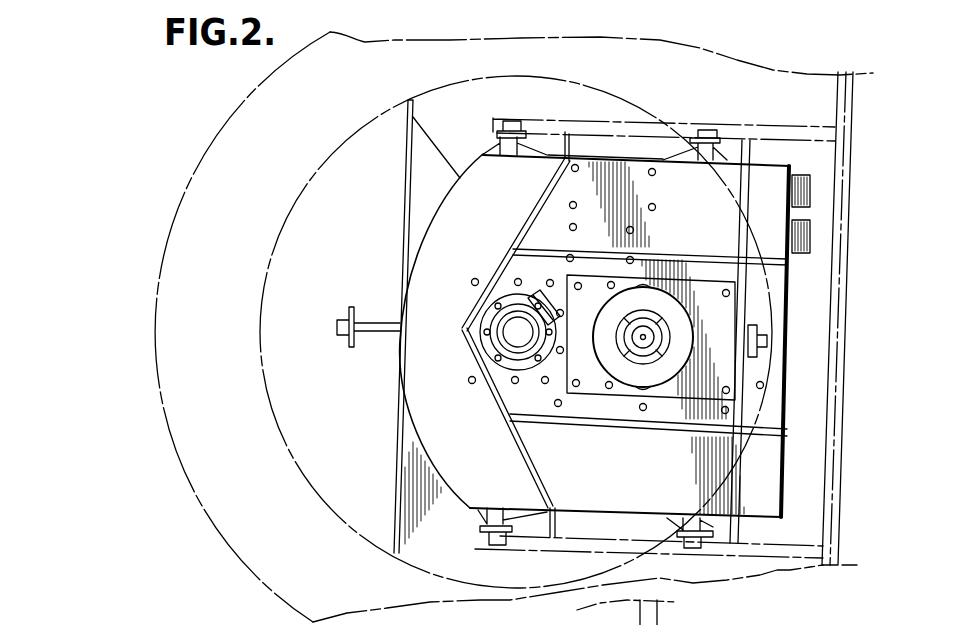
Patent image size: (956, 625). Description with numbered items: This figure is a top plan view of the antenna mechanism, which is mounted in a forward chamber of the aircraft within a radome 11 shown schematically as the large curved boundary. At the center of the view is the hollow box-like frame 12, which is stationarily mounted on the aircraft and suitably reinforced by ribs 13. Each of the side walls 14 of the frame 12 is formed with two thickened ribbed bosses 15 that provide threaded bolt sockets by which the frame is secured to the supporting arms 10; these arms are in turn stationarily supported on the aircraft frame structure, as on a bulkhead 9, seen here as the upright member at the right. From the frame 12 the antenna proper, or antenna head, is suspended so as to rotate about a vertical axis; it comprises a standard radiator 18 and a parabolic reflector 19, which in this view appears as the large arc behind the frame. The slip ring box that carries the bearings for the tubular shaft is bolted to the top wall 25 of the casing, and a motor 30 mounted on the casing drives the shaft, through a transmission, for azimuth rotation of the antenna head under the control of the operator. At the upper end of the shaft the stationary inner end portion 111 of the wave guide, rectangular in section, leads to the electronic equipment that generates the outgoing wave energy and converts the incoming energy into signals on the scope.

The bulkhead 9 is at (848, 212).
The supporting arms 10 is at (800, 127).
The radome 11 is at (188, 480).
The frame 12 is at (803, 338).
The ribs 13 is at (677, 253).
The side walls 14 is at (633, 156).
The bosses 15 is at (523, 143).
The radiator 18 is at (378, 331).
The parabolic reflector 19 is at (407, 203).
The top wall 25 is at (527, 260).
The motor 30 is at (687, 312).
The inner end portion of the wave guide 111 is at (517, 327).